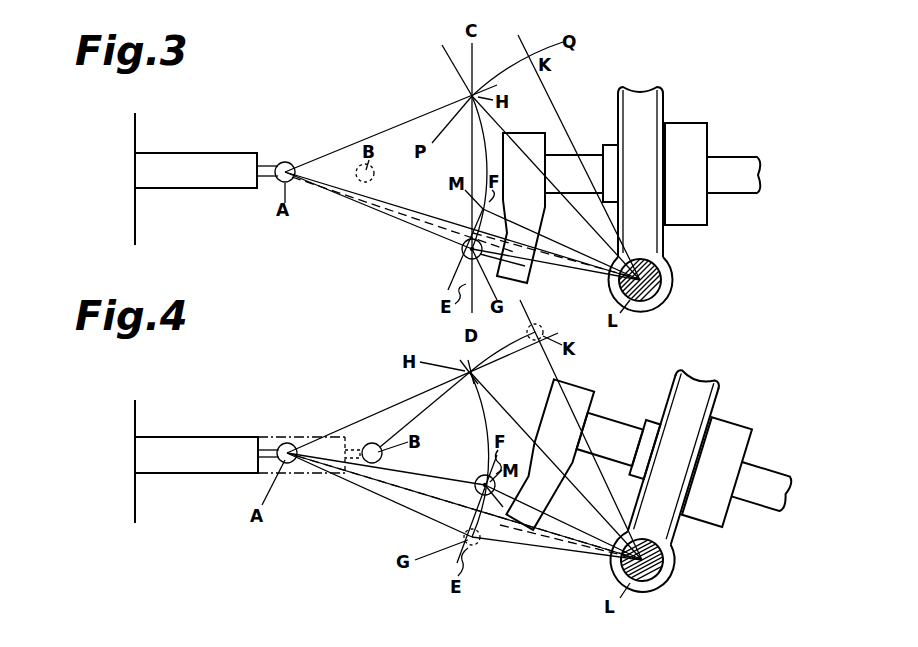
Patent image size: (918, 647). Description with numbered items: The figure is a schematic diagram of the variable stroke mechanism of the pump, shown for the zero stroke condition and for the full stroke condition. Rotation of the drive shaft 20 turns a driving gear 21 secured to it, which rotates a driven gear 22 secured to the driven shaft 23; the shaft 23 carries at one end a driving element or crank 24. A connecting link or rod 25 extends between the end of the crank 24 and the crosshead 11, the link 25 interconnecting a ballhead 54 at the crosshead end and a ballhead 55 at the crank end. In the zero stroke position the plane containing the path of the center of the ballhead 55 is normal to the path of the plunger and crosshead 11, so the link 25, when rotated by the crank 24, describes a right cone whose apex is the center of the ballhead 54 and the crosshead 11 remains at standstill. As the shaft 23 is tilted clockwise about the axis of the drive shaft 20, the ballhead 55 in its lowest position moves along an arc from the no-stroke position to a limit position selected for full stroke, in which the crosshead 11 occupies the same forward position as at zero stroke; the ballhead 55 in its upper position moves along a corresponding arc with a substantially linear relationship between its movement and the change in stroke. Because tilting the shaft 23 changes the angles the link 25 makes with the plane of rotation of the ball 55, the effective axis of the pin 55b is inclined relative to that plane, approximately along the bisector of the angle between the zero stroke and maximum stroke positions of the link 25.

In FIG. 3, the crosshead 11 is at (235, 150).
In FIG. 4, the crosshead 11 is at (170, 436).
In FIG. 3, the ballhead 54 is at (291, 164).
In FIG. 4, the ballhead 54 is at (290, 445).
In FIG. 3, the connecting link 25 is at (348, 200).
In FIG. 4, the connecting link 25 is at (358, 509).
In FIG. 3, the ballhead 55 is at (463, 256).
In FIG. 4, the ballhead 55 is at (478, 480).
In FIG. 3, the pin 55b is at (523, 270).
In FIG. 4, the pin 55b is at (487, 495).
In FIG. 3, the crank 24 is at (543, 208).
In FIG. 4, the crank 24 is at (578, 393).
In FIG. 3, the driven shaft 23 is at (575, 152).
In FIG. 4, the driven shaft 23 is at (607, 428).
In FIG. 3, the driven gear 22 is at (661, 99).
In FIG. 4, the driven gear 22 is at (712, 392).
In FIG. 3, the driving gear 21 is at (665, 266).
In FIG. 4, the driving gear 21 is at (675, 556).
In FIG. 3, the drive shaft 20 is at (657, 291).
In FIG. 4, the drive shaft 20 is at (656, 573).